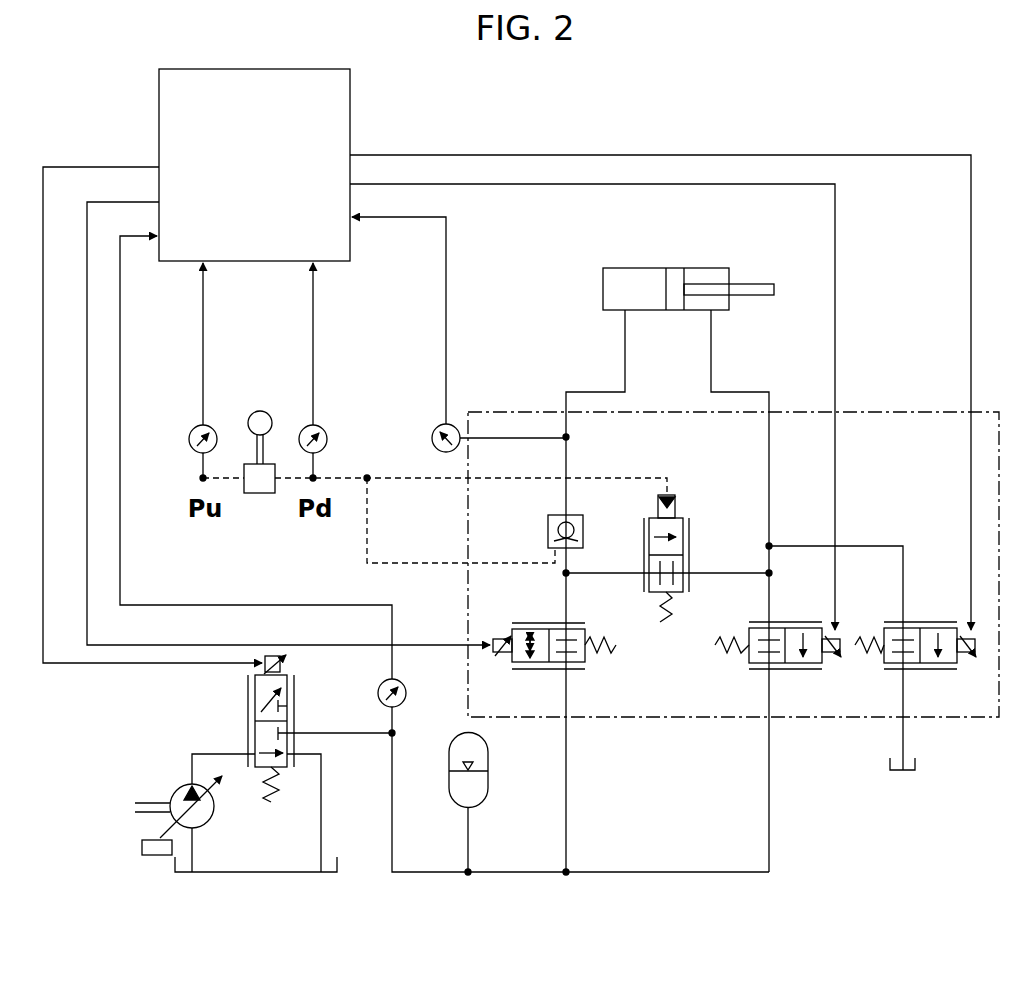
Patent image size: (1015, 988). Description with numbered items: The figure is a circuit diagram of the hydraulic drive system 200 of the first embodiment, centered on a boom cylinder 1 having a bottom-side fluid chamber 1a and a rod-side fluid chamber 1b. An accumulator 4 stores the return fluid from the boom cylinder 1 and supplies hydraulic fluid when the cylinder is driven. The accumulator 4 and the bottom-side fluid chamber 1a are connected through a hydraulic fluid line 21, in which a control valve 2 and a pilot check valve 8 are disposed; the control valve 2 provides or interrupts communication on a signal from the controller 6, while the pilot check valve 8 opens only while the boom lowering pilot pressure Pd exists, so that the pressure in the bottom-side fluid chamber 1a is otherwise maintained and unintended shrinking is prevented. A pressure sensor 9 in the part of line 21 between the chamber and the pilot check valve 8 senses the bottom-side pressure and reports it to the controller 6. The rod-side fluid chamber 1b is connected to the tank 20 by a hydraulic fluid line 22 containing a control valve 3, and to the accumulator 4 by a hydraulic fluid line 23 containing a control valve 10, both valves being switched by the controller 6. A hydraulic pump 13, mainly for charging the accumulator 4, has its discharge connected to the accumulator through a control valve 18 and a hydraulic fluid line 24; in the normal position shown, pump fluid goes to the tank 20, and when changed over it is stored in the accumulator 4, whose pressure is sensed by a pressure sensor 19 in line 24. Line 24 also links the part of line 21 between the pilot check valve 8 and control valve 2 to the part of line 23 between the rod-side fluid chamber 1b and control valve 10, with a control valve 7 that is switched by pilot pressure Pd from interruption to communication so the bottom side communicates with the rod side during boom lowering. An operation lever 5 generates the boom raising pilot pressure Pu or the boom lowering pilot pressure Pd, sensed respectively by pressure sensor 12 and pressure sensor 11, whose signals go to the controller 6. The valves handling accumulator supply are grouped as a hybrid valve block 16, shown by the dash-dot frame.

The hydraulic drive system 200 is at (636, 130).
The controller 6 is at (358, 112).
The boom cylinder 1 is at (668, 256).
The bottom-side fluid chamber 1a is at (618, 265).
The rod-side fluid chamber 1b is at (712, 265).
The hydraulic fluid line 21 is at (622, 362).
The hydraulic fluid line 23 is at (768, 784).
The hydraulic fluid line 22 is at (876, 544).
The hydraulic fluid line 24 is at (616, 570).
The valve block 16 is at (902, 410).
The pressure sensor 12 is at (192, 427).
The pressure sensor 11 is at (326, 427).
The operation lever 5 is at (260, 410).
The pressure sensor 9 is at (434, 427).
The pilot check valve 8 is at (548, 530).
The control valve 7 is at (690, 530).
The control valve 2 is at (532, 624).
The control valve 10 is at (800, 622).
The control valve 3 is at (935, 622).
The tank 20 is at (916, 766).
The control valve 18 is at (246, 714).
The pressure sensor 19 is at (378, 690).
The hydraulic pump 13 is at (172, 786).
The accumulator 4 is at (489, 762).